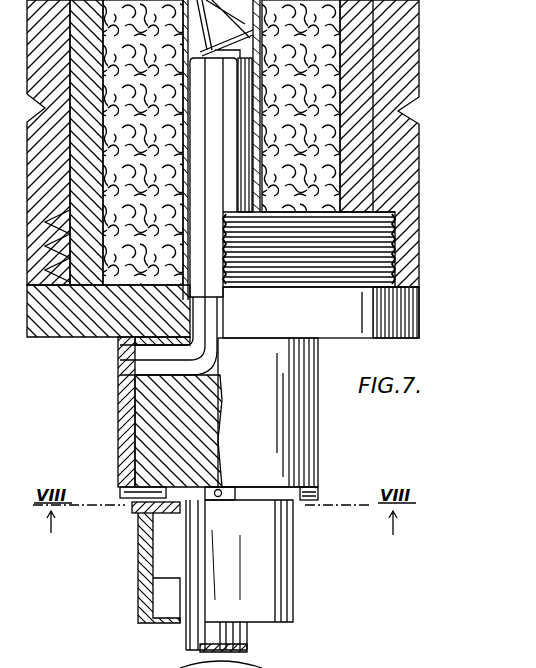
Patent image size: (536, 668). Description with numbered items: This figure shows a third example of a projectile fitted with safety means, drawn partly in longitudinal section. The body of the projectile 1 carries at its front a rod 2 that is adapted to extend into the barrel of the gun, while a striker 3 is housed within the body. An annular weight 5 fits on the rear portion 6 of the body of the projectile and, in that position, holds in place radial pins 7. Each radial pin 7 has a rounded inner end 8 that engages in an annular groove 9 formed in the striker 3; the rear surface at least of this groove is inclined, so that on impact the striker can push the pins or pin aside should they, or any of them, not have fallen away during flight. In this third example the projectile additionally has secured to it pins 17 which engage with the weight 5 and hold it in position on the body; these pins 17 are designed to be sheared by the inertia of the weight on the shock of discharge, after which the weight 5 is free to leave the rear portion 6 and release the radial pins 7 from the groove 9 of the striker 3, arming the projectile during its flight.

The body of the projectile 1 is at (392, 153).
The rod 2 is at (245, 638).
The striker 3 is at (221, 148).
The weight 5 is at (118, 455).
The rear portion of the body 6 is at (163, 415).
The radial pins 7 is at (120, 345).
The rounded inner end 8 is at (120, 352).
The annular groove 9 is at (133, 372).
The pins 17 is at (125, 503).